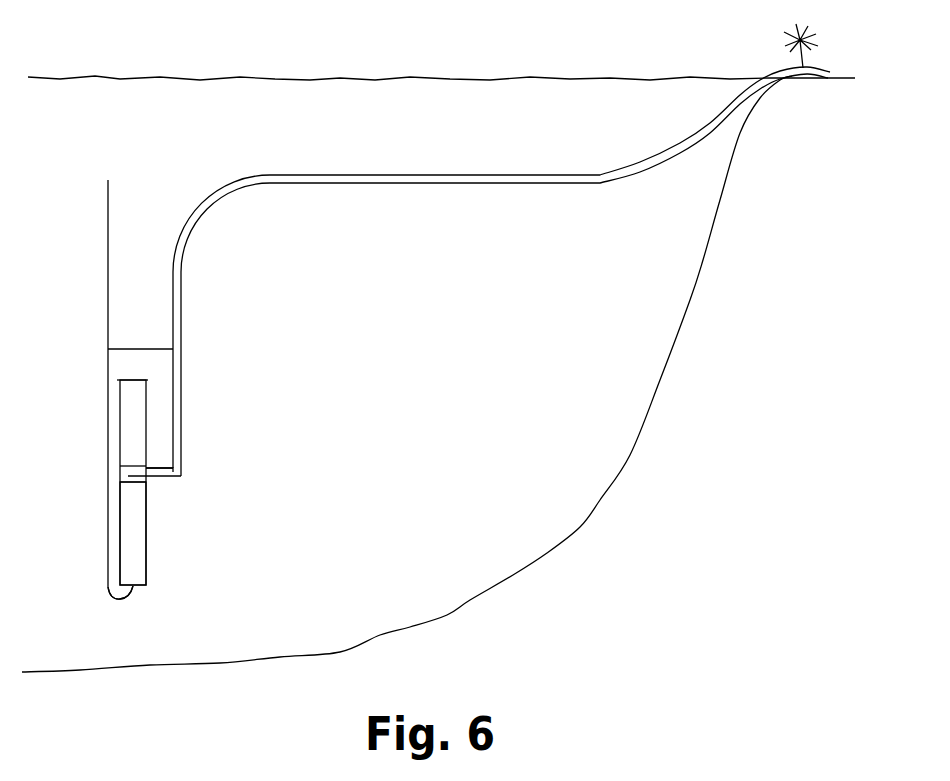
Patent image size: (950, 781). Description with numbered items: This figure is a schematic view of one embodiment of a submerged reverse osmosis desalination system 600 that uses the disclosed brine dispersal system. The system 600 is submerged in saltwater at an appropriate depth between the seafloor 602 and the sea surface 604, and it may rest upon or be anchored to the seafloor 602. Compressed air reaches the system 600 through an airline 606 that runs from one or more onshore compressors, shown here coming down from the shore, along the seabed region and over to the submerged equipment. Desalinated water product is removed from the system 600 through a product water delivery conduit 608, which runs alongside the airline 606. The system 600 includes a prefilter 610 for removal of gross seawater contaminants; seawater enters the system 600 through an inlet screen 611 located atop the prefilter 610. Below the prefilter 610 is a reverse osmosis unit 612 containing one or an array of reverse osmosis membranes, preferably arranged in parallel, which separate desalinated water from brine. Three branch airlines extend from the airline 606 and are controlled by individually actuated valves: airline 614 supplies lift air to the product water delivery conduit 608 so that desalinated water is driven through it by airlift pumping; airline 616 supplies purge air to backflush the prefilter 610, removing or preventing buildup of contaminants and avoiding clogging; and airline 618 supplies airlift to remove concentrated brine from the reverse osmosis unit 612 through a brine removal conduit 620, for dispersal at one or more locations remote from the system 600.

The SRO desalination system 600 is at (287, 260).
The seafloor 602 is at (407, 374).
The sea surface 604 is at (441, 51).
The airline 606 is at (516, 240).
The product water delivery conduit 608 is at (521, 275).
The prefilter 610 is at (98, 389).
The inlet screen 611 is at (95, 358).
The reverse osmosis unit 612 is at (161, 533).
The airline 614 is at (186, 459).
The airline 616 is at (157, 468).
The airline 618 is at (140, 322).
The brine removal conduit 620 is at (114, 620).